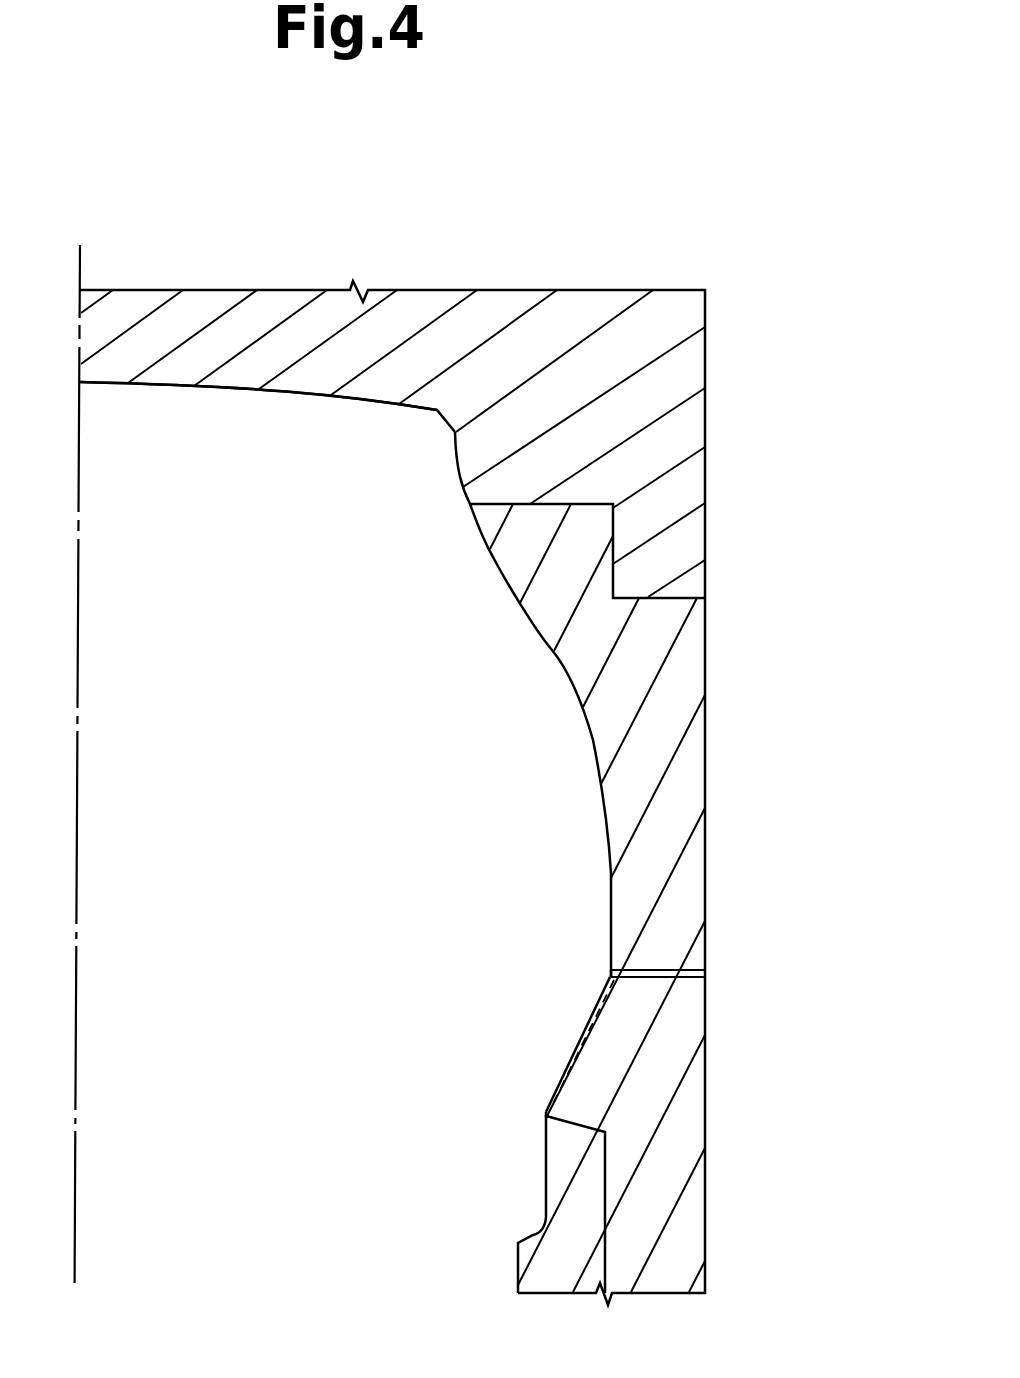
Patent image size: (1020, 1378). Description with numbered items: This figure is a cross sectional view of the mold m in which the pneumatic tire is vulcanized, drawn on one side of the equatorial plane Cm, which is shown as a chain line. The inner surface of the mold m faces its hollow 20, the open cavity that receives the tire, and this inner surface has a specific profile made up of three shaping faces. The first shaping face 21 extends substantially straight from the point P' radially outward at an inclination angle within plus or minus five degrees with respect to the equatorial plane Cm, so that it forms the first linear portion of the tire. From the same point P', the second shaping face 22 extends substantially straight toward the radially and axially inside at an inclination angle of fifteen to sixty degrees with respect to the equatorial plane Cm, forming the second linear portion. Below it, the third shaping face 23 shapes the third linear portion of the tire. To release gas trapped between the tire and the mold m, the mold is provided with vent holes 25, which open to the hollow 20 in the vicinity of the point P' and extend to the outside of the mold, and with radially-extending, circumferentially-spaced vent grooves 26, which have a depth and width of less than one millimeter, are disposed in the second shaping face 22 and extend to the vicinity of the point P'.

The mold m is at (753, 408).
The equatorial plane Cm is at (85, 744).
The hollow 20 is at (255, 822).
The first shaping face 21 is at (606, 899).
The second shaping face 22 is at (566, 1052).
The third shaping face 23 is at (544, 1165).
The vent holes 25 is at (705, 973).
The vent grooves 26 is at (587, 1017).
The point P' P is at (599, 972).